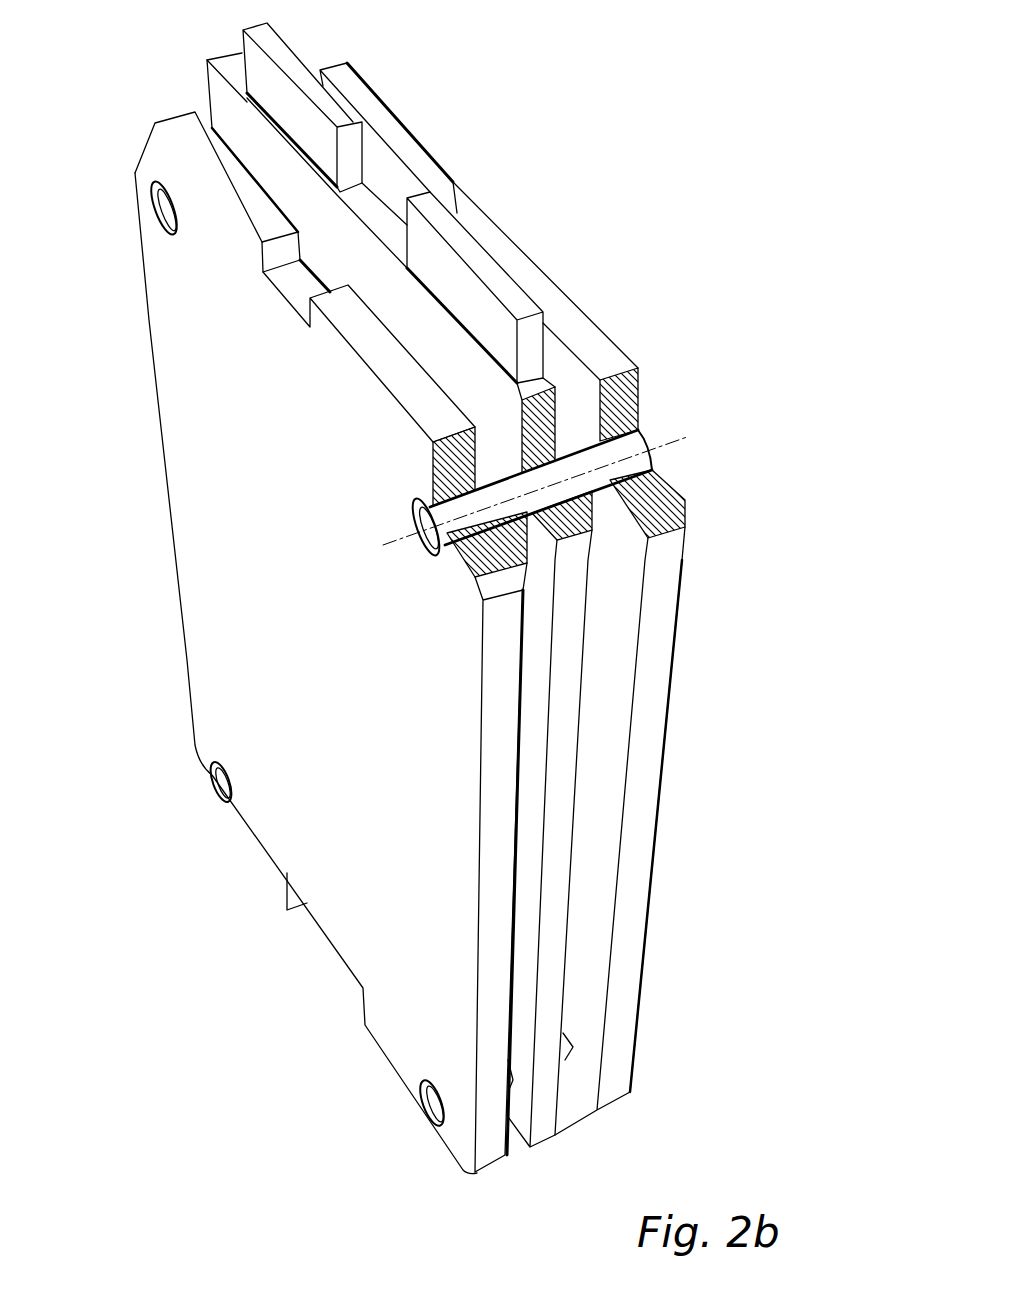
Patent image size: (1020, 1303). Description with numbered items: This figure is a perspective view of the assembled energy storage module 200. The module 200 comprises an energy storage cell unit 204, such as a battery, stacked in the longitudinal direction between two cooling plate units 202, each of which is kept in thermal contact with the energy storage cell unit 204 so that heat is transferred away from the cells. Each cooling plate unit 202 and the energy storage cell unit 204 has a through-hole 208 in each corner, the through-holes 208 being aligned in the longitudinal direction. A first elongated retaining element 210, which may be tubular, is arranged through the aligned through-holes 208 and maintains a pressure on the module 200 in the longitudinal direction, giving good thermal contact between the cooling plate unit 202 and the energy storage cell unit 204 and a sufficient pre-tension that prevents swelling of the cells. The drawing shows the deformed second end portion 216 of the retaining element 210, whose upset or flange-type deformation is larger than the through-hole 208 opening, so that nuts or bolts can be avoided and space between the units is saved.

The energy storage module 200 is at (513, 85).
The cooling plate unit 202 is at (643, 868).
The energy storage cell unit 204 is at (547, 995).
The through-hole 208 is at (611, 483).
The first elongated retaining element 210 is at (576, 442).
The second end portion 216 is at (654, 469).